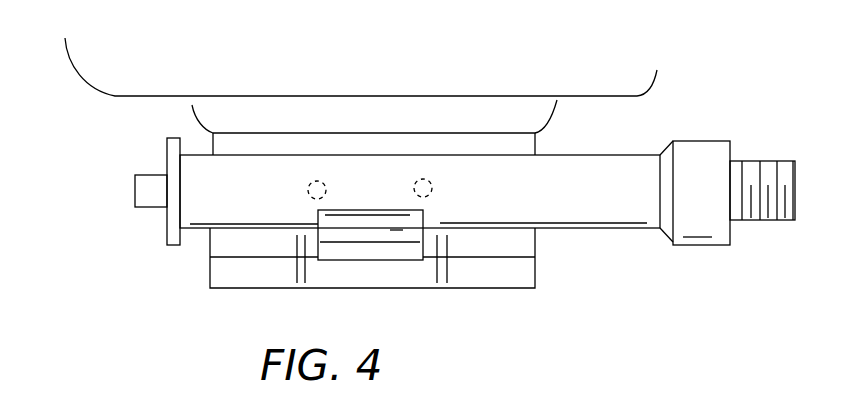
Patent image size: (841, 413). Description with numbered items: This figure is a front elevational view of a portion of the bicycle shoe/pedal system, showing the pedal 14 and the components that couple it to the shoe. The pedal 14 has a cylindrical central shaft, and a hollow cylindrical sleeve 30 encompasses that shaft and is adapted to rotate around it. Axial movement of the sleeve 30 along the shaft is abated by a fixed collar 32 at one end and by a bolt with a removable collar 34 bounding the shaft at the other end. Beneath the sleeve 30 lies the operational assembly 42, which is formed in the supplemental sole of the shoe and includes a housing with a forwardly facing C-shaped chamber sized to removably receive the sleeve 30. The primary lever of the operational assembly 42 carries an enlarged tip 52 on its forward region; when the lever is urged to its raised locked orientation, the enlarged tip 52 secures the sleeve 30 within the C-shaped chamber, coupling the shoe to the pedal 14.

The pedal 14 is at (132, 182).
The sleeve 30 is at (570, 208).
The fixed collar 32 is at (702, 152).
The removable collar 34 is at (163, 230).
The operational assembly 42 is at (257, 292).
The enlarged tip 52 is at (357, 217).